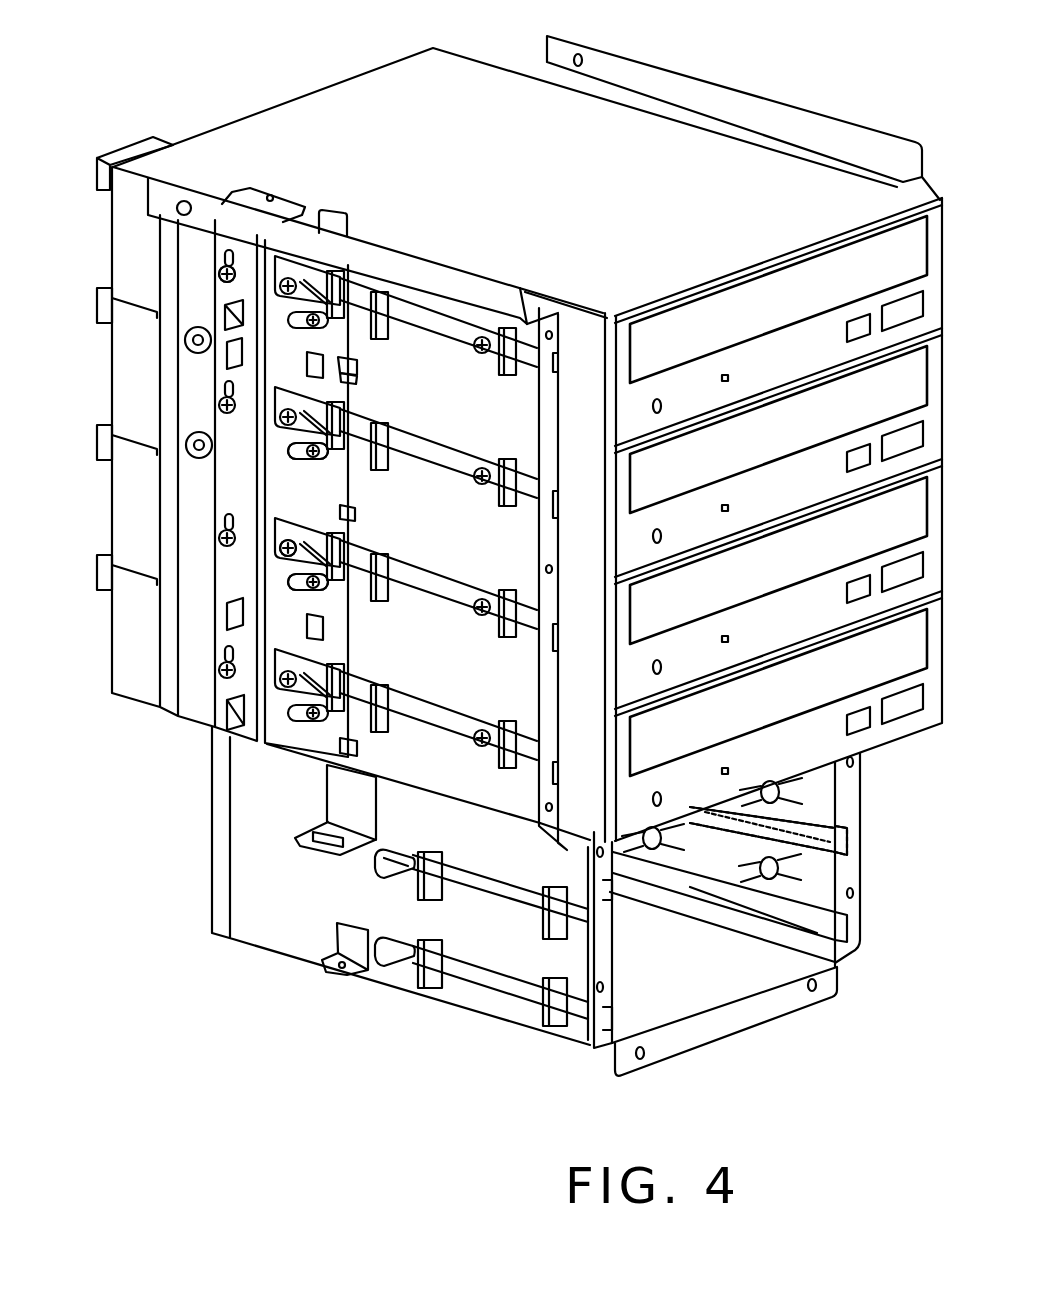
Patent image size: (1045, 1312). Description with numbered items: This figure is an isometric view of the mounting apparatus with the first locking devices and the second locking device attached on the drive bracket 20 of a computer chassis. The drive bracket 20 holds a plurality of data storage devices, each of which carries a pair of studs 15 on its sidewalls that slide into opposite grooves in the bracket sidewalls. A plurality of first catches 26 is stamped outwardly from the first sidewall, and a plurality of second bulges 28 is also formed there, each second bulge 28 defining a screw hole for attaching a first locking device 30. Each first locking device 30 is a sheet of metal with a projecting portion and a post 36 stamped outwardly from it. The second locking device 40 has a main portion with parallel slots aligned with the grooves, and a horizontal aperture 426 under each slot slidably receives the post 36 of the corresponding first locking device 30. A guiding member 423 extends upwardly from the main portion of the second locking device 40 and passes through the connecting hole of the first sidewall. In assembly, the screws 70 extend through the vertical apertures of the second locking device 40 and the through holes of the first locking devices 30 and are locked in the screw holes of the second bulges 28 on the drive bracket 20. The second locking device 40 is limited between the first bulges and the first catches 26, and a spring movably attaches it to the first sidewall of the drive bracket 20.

The guiding member 423 is at (337, 218).
The drive bracket 20 is at (442, 280).
The screws 70 is at (223, 283).
The second bulges 28 is at (190, 353).
The horizontal aperture 426 is at (293, 457).
The studs 15 is at (283, 552).
The first locking device 30 is at (292, 568).
The post 36 is at (357, 361).
The first catches 26 is at (350, 378).
The second locking device 40 is at (297, 737).